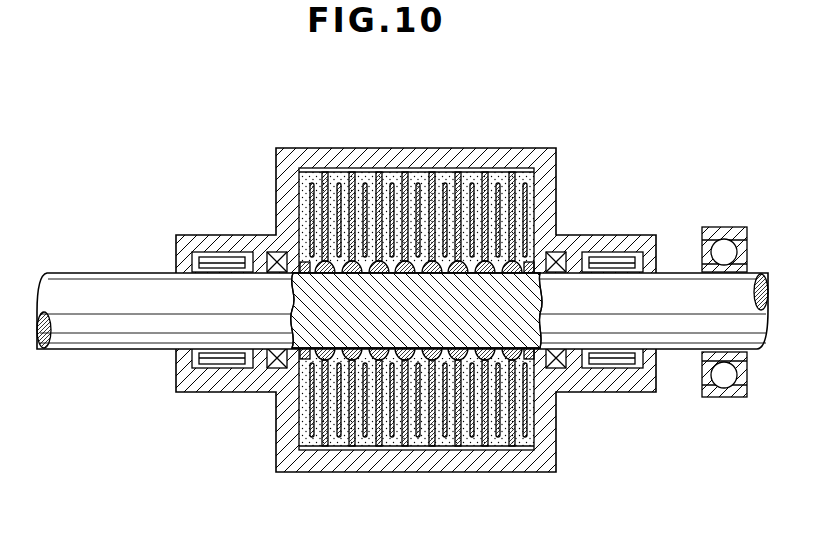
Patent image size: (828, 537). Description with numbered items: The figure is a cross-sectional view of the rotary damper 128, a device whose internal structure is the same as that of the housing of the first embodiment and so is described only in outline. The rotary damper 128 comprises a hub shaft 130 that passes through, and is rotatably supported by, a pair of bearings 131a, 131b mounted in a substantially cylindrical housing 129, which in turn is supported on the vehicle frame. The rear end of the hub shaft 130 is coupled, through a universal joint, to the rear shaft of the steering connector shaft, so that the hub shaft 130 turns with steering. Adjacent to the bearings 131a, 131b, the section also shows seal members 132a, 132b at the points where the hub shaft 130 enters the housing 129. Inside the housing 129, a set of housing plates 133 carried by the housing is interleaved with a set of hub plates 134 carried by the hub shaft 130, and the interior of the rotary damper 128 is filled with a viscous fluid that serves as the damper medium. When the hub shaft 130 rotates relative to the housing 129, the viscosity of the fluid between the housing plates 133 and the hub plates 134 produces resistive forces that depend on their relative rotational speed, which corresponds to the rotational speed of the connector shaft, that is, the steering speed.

The rotary damper 128 is at (402, 320).
The housing 129 is at (295, 162).
The hub shaft 130 is at (134, 323).
The bearing 131a is at (219, 364).
The bearing 131b is at (630, 364).
The seal 132a is at (270, 252).
The seal 132b is at (560, 372).
The housing plates 133 is at (512, 170).
The hub plates 134 is at (473, 197).